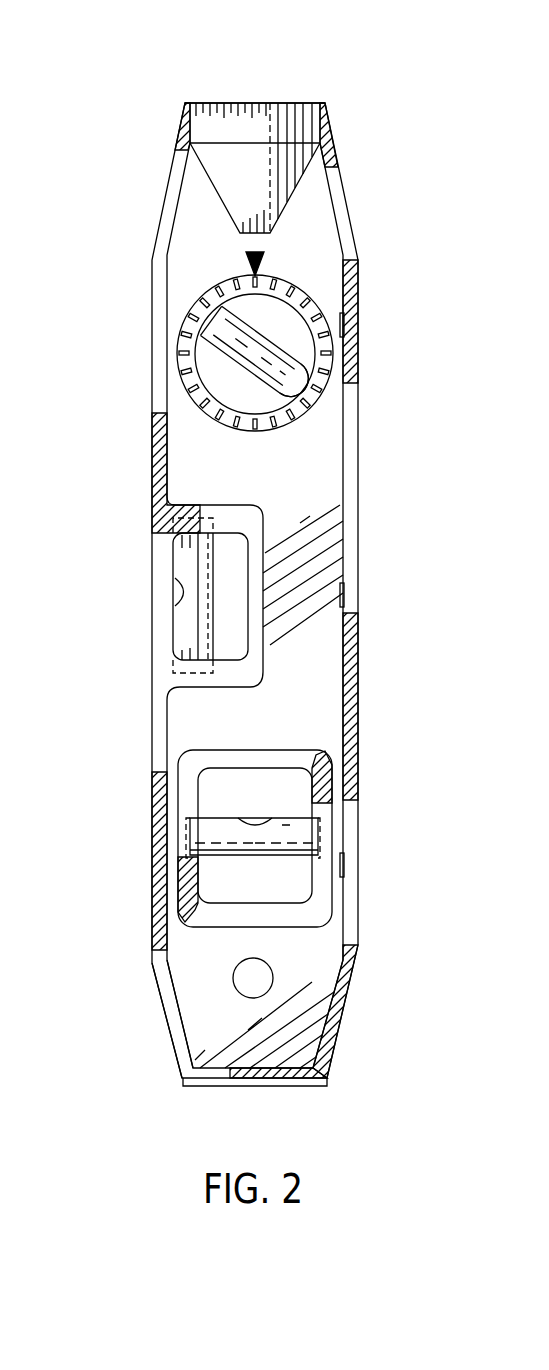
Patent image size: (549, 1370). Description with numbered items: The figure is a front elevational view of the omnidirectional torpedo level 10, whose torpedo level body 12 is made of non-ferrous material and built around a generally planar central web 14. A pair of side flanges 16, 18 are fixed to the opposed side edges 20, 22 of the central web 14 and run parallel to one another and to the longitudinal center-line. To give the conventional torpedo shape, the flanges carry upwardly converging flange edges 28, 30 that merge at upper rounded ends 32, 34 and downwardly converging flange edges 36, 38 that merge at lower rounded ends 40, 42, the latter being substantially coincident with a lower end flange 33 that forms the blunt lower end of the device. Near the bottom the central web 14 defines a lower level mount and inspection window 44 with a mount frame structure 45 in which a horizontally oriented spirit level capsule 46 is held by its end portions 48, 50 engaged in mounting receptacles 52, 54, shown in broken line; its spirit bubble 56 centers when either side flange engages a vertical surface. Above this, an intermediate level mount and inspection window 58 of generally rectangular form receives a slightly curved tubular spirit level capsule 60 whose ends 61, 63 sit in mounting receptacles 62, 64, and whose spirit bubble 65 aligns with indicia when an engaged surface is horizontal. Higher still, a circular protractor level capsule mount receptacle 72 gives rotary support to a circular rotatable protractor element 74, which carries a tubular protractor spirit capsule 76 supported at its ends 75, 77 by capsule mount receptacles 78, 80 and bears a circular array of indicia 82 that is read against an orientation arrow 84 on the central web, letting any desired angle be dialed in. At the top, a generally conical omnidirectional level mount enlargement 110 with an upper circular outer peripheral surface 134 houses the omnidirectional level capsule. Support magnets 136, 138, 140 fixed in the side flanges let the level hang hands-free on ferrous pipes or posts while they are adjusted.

The omnidirectional torpedo level 10 is at (162, 42).
The torpedo level body 12 is at (375, 483).
The central web 14 is at (192, 465).
The side flange 16 is at (160, 407).
The side flange 18 is at (350, 552).
The side edge of central web 20 is at (167, 717).
The side edge of central web 22 is at (360, 695).
The upwardly converging flange edge 28 is at (170, 193).
The upwardly converging flange edge 30 is at (343, 195).
The upper rounded end 32 is at (185, 105).
The lower end flange 33 is at (233, 1082).
The upper rounded end 34 is at (325, 103).
The downwardly converging flange edge 36 is at (173, 1015).
The downwardly converging flange edge 38 is at (337, 1008).
The lower rounded end 40 is at (195, 1082).
The lower rounded end 42 is at (318, 1082).
The lower level mount and inspection window 44 is at (223, 885).
The mount frame structure 45 is at (318, 905).
The horizontally oriented spirit level capsule 46 is at (217, 817).
The end portion of spirit level capsule 48 is at (187, 833).
The end portion of spirit level capsule 50 is at (317, 828).
The mounting receptacle 52 is at (177, 843).
The mounting receptacle 54 is at (330, 840).
The spirit bubble 56 is at (251, 818).
The intermediate level mount and inspection window 58 is at (230, 565).
The tubular spirit level capsule 60 is at (187, 625).
The end of spirit level capsule 61 is at (173, 533).
The mounting receptacle 62 is at (150, 516).
The end of spirit level capsule 63 is at (200, 663).
The mounting receptacle 64 is at (150, 660).
The spirit bubble 65 is at (173, 593).
The circular protractor level capsule mount receptacle 72 is at (217, 287).
The circular rotatable protractor element 74 is at (220, 377).
The end of protractor spirit capsule 75 is at (215, 322).
The tubular protractor spirit capsule 76 is at (277, 362).
The end of protractor spirit capsule 77 is at (292, 397).
The capsule mount receptacle 78 is at (212, 345).
The capsule mount receptacle 80 is at (307, 377).
The circular array of indicia 82 is at (272, 432).
The orientation arrow 84 is at (264, 255).
The omnidirectional level mount enlargement 110 is at (310, 125).
The upper circular outer peripheral surface 134 is at (215, 130).
The support magnet 136 is at (343, 325).
The support magnet 138 is at (345, 590).
The support magnet 140 is at (343, 865).